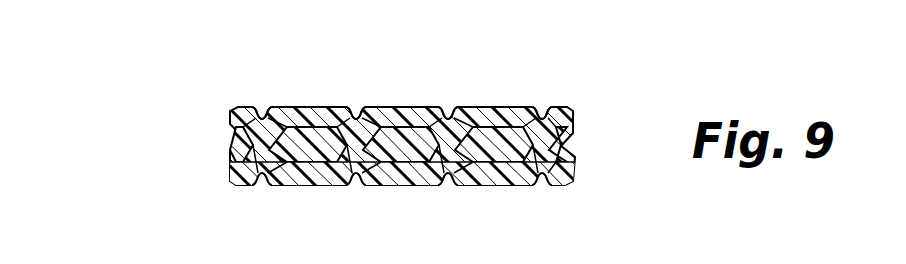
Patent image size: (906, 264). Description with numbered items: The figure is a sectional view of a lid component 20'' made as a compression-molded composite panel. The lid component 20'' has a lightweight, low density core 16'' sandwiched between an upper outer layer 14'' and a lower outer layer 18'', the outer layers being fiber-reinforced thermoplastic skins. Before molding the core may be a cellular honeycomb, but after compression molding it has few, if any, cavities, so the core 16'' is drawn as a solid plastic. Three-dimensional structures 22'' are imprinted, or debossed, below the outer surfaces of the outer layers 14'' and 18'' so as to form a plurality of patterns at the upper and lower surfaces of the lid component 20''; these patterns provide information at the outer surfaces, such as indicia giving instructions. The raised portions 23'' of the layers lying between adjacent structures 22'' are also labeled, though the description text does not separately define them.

The lid component 20'' is at (381, 101).
The outer layer 14'' is at (418, 131).
The core 16'' is at (403, 103).
The outer layer 18'' is at (439, 195).
The 3-D structures 22'' is at (417, 146).
The segments 23'' is at (418, 145).